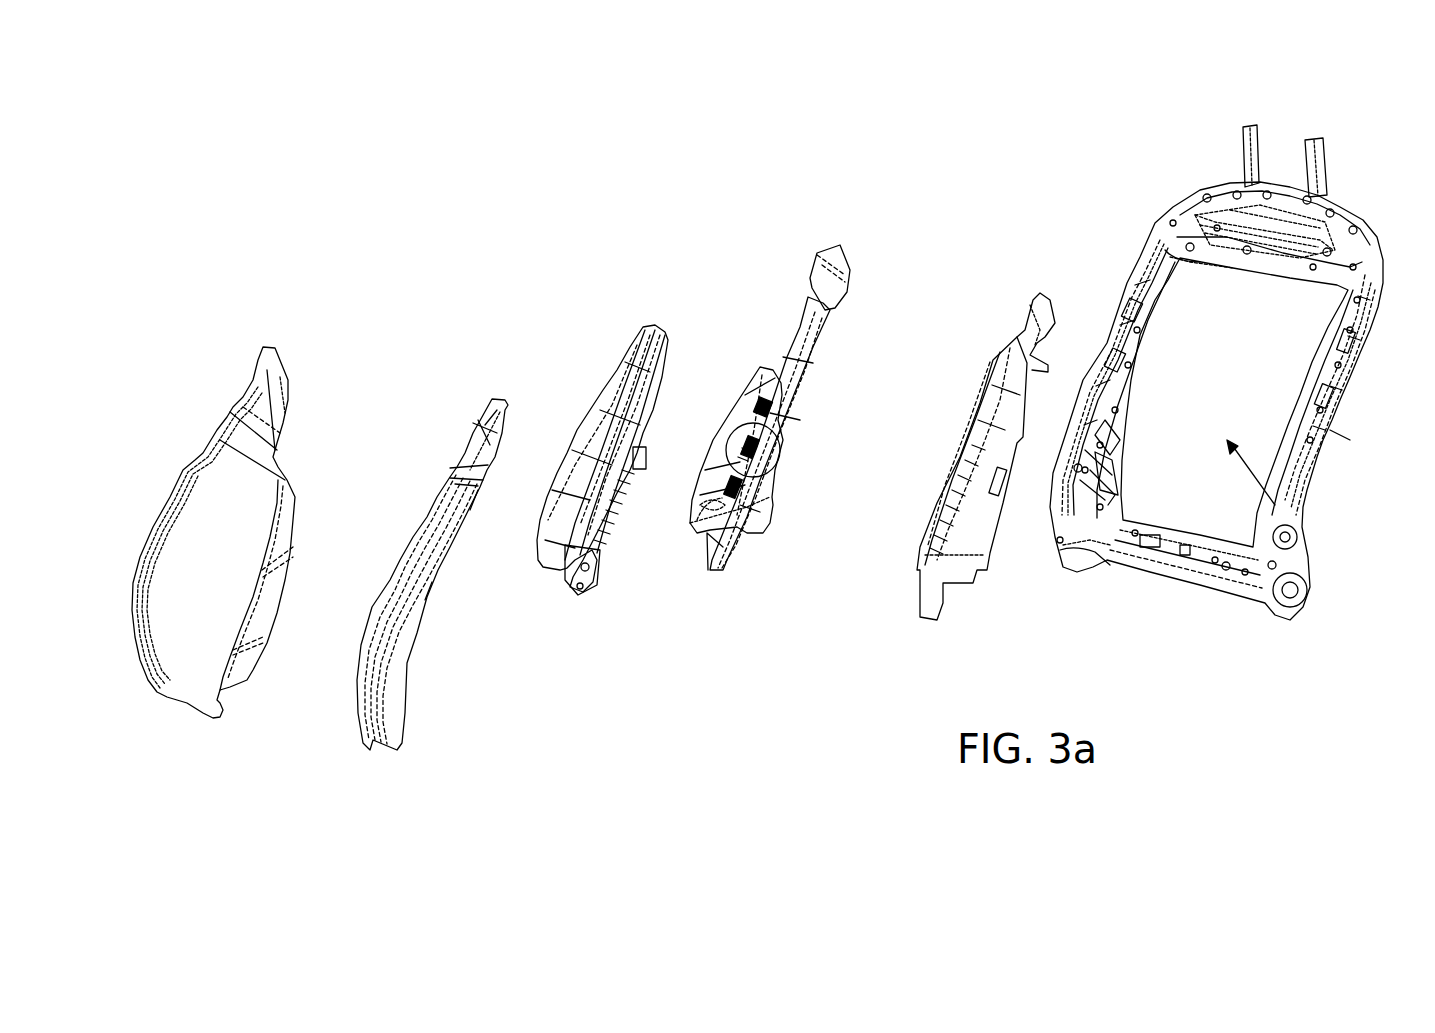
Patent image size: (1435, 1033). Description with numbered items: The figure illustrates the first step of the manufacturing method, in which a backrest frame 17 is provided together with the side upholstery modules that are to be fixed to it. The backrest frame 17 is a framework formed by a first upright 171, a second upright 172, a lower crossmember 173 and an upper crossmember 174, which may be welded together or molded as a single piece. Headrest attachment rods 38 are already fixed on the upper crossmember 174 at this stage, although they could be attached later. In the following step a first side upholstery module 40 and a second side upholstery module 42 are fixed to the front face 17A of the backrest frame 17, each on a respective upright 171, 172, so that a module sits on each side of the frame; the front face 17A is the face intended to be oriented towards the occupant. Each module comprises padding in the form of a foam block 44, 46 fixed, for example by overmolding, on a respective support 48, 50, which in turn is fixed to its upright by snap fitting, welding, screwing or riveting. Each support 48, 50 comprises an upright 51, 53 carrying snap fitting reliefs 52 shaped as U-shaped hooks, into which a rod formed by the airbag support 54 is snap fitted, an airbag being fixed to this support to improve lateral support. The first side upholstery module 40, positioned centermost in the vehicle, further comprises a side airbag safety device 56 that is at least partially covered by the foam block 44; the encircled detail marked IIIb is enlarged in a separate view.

The backrest frame 17 is at (1148, 218).
The first upright 171 is at (1122, 455).
The second upright 172 is at (1318, 455).
The lower crossmember 173 is at (1226, 568).
The upper crossmember 174 is at (1252, 213).
The front face 17A is at (1297, 528).
The headrest attachment rods 38 is at (1312, 143).
The first side upholstery module 40 is at (780, 272).
The second side upholstery module 42 is at (737, 790).
The foam block 44 is at (277, 383).
The foam block 46 is at (395, 690).
The support 48 is at (783, 357).
The support 50 is at (920, 603).
The upright 51 is at (1013, 355).
The snap fitting reliefs 52 is at (953, 453).
The upright 53 is at (840, 273).
The airbag support 54 is at (697, 520).
The side airbag safety device 56 is at (618, 378).
The section view marker IIIb is at (752, 415).